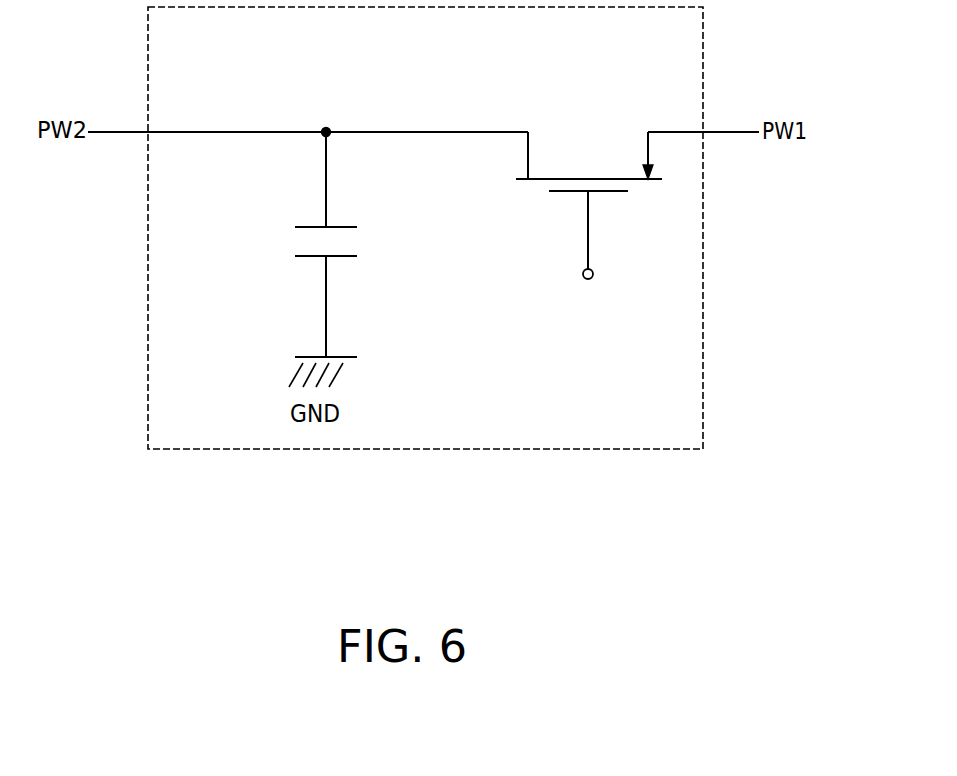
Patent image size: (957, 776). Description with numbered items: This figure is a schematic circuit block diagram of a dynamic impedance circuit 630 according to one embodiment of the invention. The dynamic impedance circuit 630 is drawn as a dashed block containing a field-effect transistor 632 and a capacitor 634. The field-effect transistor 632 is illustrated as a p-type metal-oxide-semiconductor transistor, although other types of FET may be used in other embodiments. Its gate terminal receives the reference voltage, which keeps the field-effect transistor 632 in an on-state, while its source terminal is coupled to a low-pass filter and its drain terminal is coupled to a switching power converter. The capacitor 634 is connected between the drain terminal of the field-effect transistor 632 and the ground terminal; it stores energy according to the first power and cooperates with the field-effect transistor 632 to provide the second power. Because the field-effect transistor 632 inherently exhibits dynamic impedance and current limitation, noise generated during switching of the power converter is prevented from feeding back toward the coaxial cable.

The dynamic impedance circuit 630 is at (604, 500).
The field-effect transistor 632 is at (596, 127).
The capacitor 634 is at (362, 246).